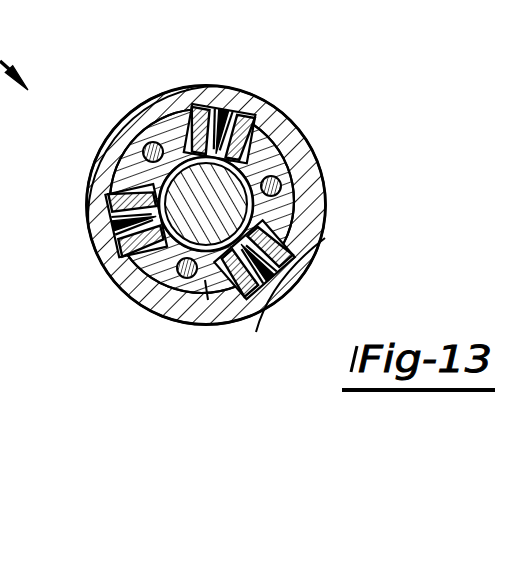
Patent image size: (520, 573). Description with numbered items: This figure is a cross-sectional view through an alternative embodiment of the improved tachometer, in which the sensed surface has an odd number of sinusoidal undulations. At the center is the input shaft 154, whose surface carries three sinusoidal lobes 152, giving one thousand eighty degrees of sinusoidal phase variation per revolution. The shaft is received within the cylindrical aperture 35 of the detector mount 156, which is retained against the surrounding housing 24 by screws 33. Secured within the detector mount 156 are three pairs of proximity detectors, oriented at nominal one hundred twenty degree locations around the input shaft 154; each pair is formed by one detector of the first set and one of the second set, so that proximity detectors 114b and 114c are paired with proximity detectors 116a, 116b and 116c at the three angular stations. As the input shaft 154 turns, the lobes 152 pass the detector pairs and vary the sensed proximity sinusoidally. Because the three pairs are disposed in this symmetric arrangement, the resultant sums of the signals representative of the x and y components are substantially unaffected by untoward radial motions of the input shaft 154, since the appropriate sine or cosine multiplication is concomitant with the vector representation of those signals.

The housing 24 is at (313, 147).
The screws 33 is at (322, 191).
The cylindrical aperture 35 is at (213, 171).
The input shaft 154 is at (300, 222).
The lobes 152 is at (228, 124).
The detector mount 156 is at (183, 296).
The proximity detector 116a is at (195, 108).
The proximity detector 116b is at (268, 250).
The proximity detector 116c is at (113, 252).
The proximity detector 114b is at (250, 128).
The proximity detector 114c is at (108, 195).